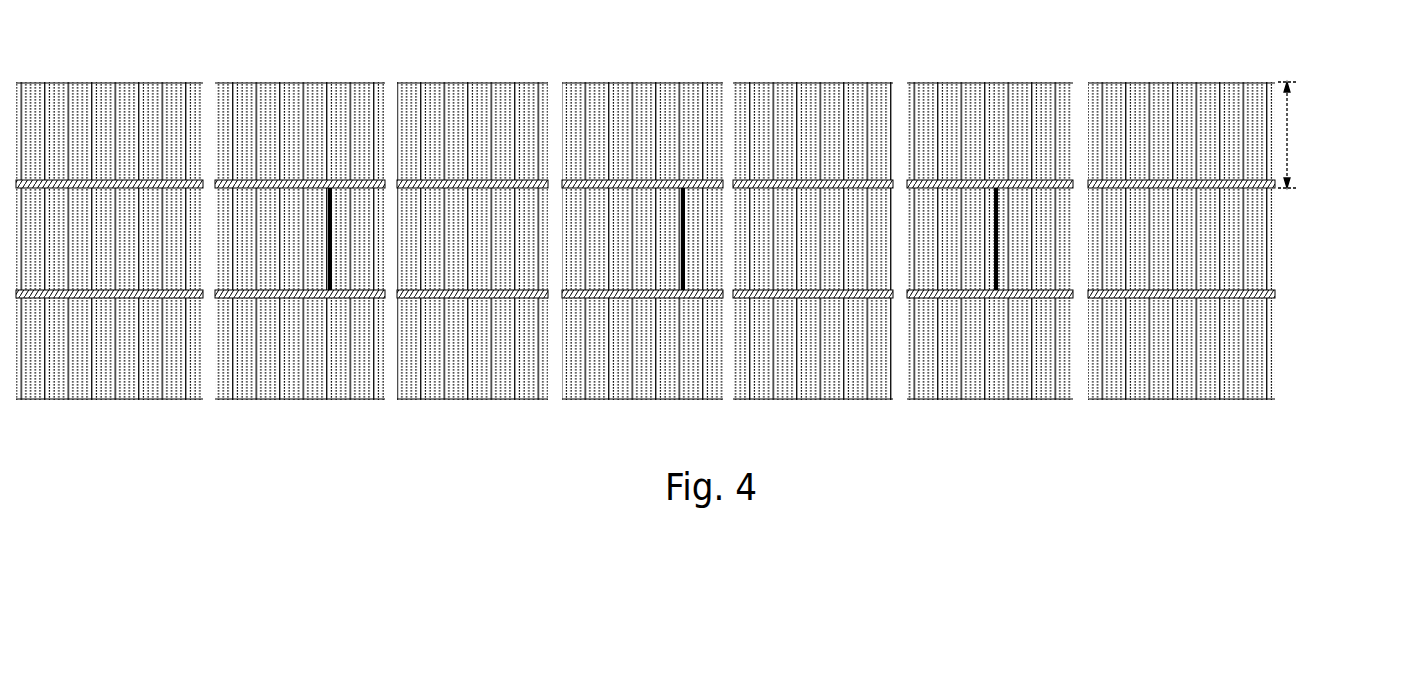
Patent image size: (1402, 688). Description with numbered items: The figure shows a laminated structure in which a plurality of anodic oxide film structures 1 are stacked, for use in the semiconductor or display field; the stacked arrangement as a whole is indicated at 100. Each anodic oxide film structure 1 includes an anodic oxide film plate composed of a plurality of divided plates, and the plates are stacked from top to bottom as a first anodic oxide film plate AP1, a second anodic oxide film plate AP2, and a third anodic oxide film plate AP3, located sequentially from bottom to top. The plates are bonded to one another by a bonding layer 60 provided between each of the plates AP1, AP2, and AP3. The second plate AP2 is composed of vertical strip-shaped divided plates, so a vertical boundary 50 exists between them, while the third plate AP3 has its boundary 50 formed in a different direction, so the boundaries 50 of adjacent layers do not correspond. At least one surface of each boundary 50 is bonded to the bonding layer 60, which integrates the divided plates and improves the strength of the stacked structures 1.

The display device 100 is at (702, 241).
The third anodic oxide film plate AP3 is at (1230, 93).
The second anodic oxide film plate AP2 is at (1240, 264).
The first anodic oxide film plate AP1 is at (1240, 350).
The bonding layer 60 is at (1263, 189).
The boundary 50 is at (997, 298).
The anodic oxide film structure 1 is at (1292, 135).